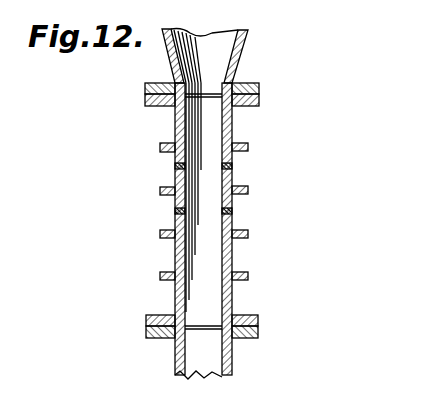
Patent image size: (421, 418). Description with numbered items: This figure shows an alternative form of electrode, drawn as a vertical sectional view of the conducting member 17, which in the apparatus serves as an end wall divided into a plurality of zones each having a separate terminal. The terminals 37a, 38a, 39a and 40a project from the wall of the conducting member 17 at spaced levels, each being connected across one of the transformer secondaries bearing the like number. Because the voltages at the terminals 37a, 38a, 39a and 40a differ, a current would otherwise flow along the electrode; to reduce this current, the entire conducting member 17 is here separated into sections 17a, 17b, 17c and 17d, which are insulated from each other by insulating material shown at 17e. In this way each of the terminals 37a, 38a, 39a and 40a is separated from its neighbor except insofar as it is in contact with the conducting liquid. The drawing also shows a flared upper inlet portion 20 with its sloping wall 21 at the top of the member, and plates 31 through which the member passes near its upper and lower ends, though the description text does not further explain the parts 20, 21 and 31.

The conducting member 17 is at (175, 124).
The section 17a is at (160, 145).
The section 17b is at (160, 192).
The section 17c is at (163, 237).
The section 17d is at (165, 279).
The insulating material 17e is at (175, 211).
The funnel inlet 20 is at (161, 54).
The funnel wall 21 is at (246, 58).
The mounting plate 31 is at (260, 100).
The terminal 37a is at (248, 146).
The terminal 38a is at (248, 190).
The terminal 39a is at (248, 234).
The terminal 40a is at (248, 277).